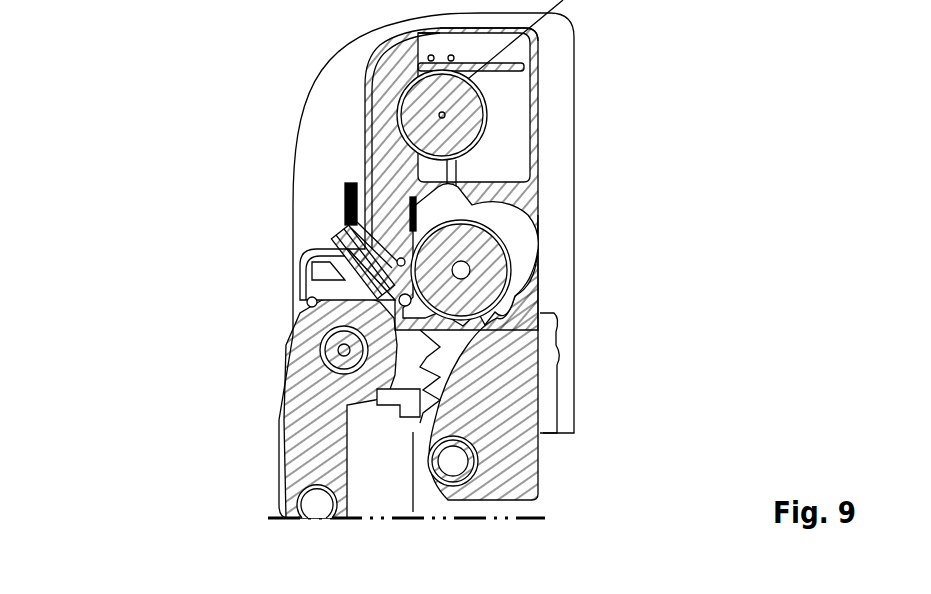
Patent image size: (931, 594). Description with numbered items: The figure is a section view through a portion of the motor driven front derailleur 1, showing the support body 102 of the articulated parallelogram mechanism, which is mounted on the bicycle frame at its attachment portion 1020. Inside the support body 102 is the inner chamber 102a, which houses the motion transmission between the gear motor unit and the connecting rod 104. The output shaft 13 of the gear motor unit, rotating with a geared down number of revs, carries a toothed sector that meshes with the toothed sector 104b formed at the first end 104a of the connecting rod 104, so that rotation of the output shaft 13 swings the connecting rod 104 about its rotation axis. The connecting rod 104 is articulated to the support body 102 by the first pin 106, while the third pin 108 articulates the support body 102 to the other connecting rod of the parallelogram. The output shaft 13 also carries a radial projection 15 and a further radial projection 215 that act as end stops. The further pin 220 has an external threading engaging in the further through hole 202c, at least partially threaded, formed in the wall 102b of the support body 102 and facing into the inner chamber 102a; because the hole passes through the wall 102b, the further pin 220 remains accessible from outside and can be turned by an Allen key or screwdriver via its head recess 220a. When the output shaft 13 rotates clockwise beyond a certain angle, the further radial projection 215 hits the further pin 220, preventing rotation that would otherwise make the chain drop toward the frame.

The derailleur 1 is at (222, 63).
The support body 102 is at (340, 152).
The inner chamber 102a is at (330, 278).
The wall 102b is at (300, 246).
The attachment portion 1020 is at (575, 118).
The output shaft 13 is at (490, 268).
The radial projection 15 is at (455, 217).
The connecting rod 104 is at (327, 434).
The first end 104a is at (308, 327).
The toothed sector 104b is at (530, 372).
The first pin 106 is at (337, 353).
The third pin 108 is at (455, 466).
The further through hole 202c is at (447, 195).
The further radial projection 215 is at (416, 312).
The further pin 220 is at (383, 277).
The head recess 220a is at (405, 262).